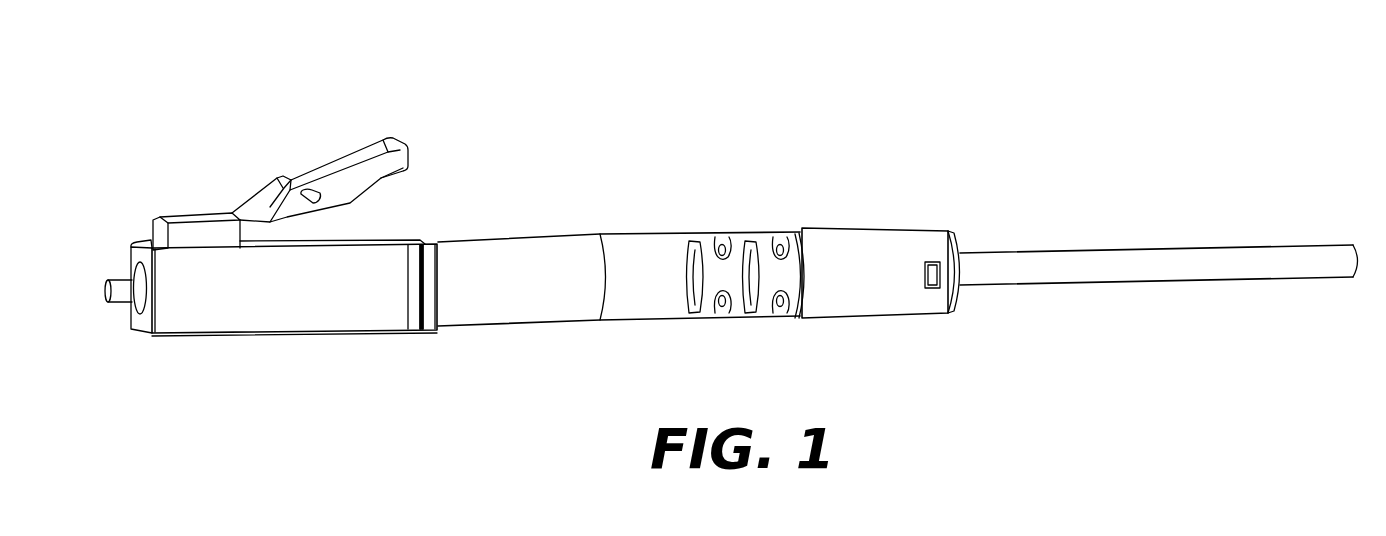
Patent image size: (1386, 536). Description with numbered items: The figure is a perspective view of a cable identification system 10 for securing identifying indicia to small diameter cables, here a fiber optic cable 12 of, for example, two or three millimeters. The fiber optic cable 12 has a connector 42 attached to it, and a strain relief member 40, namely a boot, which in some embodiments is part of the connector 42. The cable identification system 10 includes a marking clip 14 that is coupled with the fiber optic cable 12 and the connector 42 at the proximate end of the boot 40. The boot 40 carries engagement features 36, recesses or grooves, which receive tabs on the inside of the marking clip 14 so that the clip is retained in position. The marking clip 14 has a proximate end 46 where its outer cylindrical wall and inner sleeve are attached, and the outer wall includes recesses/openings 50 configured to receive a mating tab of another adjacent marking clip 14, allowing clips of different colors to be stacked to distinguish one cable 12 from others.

The cable identification system 10 is at (890, 92).
The fiber optic cable 12 is at (1153, 262).
The marking clip 14 is at (880, 250).
The engagement features 36 is at (778, 314).
The strain relief member 40 is at (733, 268).
The connector 42 is at (555, 258).
The proximate end 46 is at (955, 234).
The recesses/openings 50 is at (935, 282).